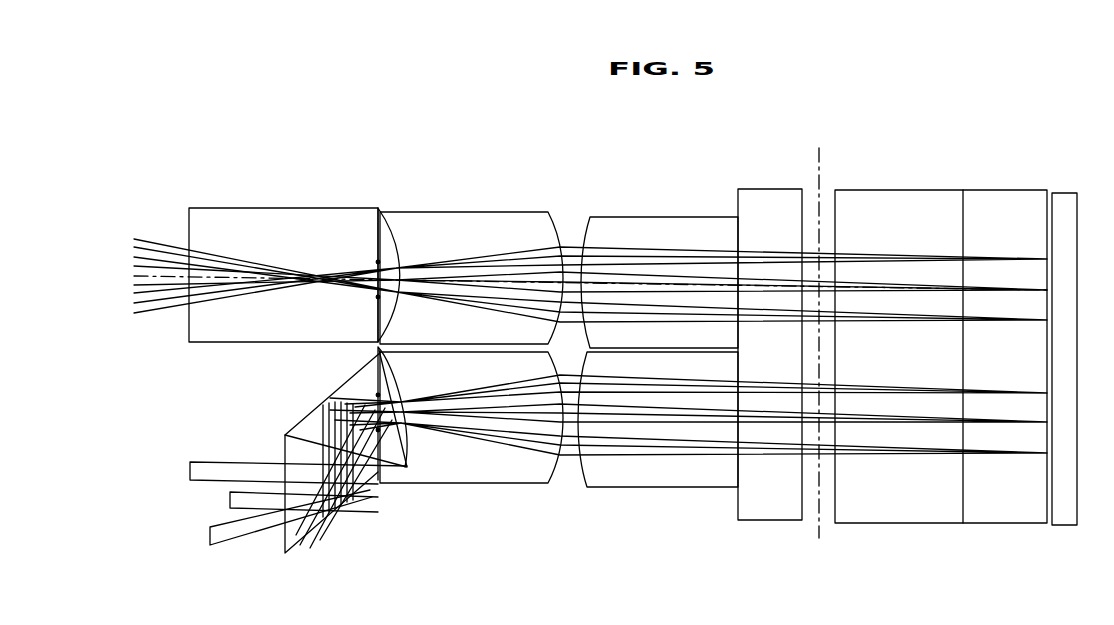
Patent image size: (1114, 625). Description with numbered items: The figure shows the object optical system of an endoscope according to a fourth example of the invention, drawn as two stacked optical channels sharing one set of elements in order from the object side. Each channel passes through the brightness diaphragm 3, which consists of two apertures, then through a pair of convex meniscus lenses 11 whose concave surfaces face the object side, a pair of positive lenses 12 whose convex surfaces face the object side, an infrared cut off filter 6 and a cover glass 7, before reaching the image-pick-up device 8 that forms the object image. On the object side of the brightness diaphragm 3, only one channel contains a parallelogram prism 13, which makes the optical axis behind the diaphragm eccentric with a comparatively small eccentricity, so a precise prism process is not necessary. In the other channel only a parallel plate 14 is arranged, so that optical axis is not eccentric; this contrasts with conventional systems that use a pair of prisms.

The parallel plate 14 is at (277, 217).
The brightness diaphragm 3 is at (397, 227).
The convex meniscus lenses 11 is at (502, 230).
The positive lenses 12 is at (655, 226).
The infrared cut off filter 6 is at (772, 200).
The cover glass 7 is at (923, 200).
The image-pick-up device 8 is at (1063, 202).
The parallelogram prism 13 is at (294, 532).